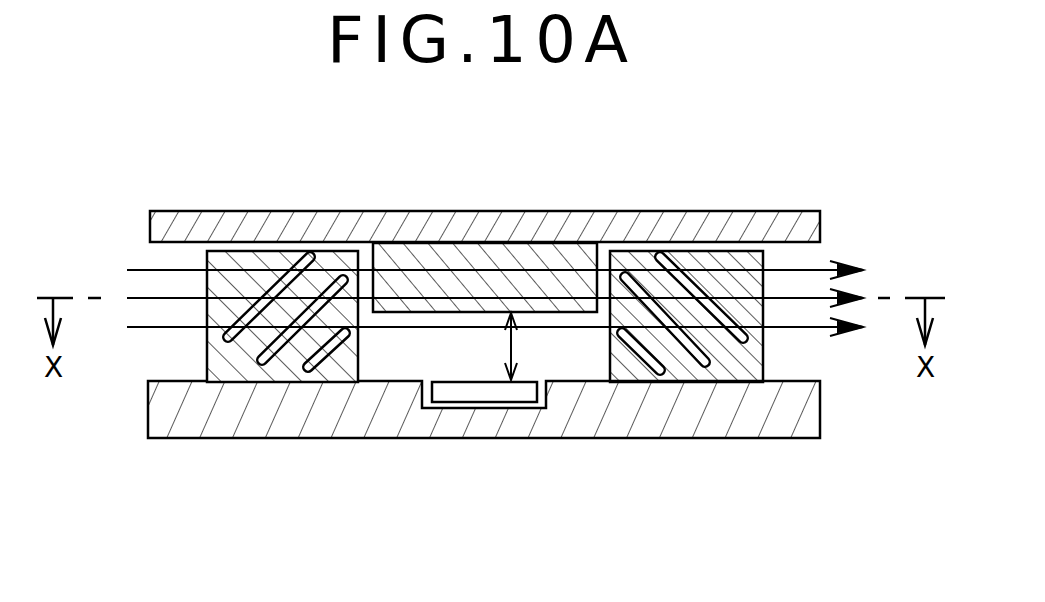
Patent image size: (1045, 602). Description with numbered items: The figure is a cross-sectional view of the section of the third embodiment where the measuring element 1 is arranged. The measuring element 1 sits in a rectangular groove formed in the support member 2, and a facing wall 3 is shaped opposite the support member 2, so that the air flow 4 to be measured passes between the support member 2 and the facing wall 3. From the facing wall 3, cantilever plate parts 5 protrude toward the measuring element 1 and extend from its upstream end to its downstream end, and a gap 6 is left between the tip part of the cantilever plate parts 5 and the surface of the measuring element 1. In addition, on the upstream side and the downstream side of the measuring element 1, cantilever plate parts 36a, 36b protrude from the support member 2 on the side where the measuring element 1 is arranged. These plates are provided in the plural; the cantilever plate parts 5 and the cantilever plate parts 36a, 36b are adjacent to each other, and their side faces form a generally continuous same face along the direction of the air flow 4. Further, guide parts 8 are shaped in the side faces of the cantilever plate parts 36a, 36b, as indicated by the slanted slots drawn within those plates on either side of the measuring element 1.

The measuring element 1 is at (448, 392).
The support member 2 is at (292, 410).
The facing wall 3 is at (342, 224).
The air flow 4 is at (157, 298).
The cantilever plate parts 5 is at (530, 295).
The gap 6 is at (516, 352).
The guide parts 8 is at (238, 335).
The cantilever plate part 36a is at (474, 318).
The cantilever plate part 36b is at (718, 262).